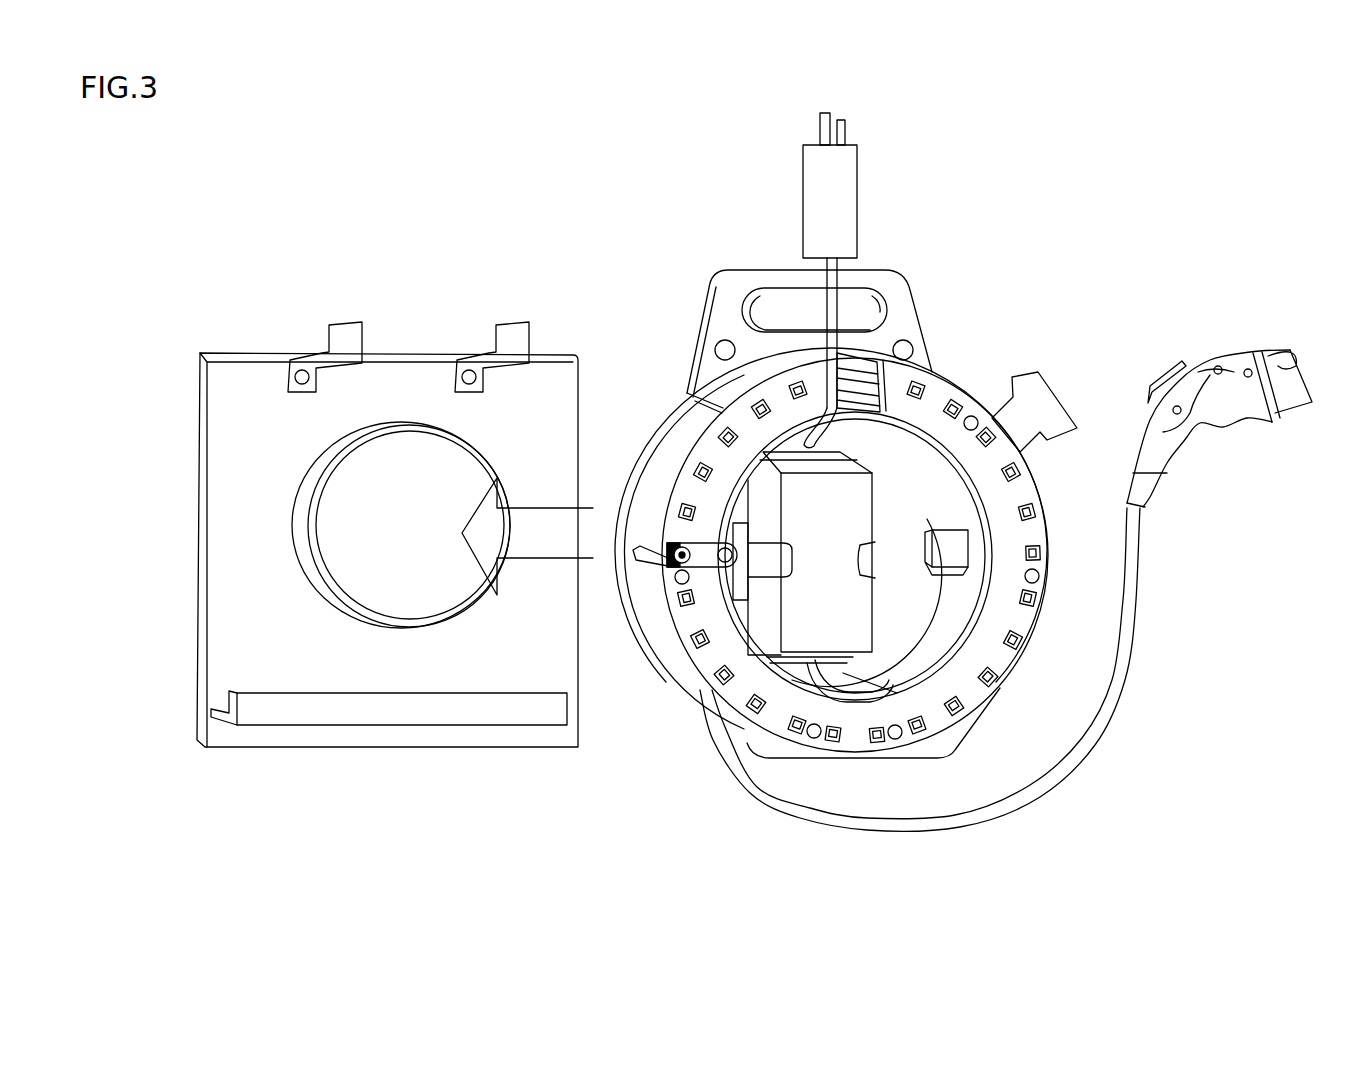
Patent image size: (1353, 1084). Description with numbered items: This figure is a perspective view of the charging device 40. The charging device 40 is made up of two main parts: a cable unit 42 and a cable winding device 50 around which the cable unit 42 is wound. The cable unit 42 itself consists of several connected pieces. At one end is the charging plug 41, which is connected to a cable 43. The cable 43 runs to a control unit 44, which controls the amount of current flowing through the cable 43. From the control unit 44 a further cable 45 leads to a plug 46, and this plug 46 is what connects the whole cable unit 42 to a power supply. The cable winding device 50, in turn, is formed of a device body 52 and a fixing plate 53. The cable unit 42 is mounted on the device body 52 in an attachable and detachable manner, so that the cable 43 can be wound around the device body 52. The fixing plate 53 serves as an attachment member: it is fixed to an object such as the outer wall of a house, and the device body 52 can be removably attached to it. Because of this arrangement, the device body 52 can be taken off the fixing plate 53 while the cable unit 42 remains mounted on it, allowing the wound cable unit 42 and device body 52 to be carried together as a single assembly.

The charging device 40 is at (697, 153).
The charging plug 41 is at (1207, 407).
The cable unit 42 is at (889, 848).
The cable 43 is at (1079, 770).
The control unit 44 is at (855, 507).
The cable 45 is at (830, 310).
The plug 46 is at (820, 203).
The cable winding device 50 is at (703, 252).
The device body 52 is at (727, 304).
The fixing plate 53 is at (558, 384).